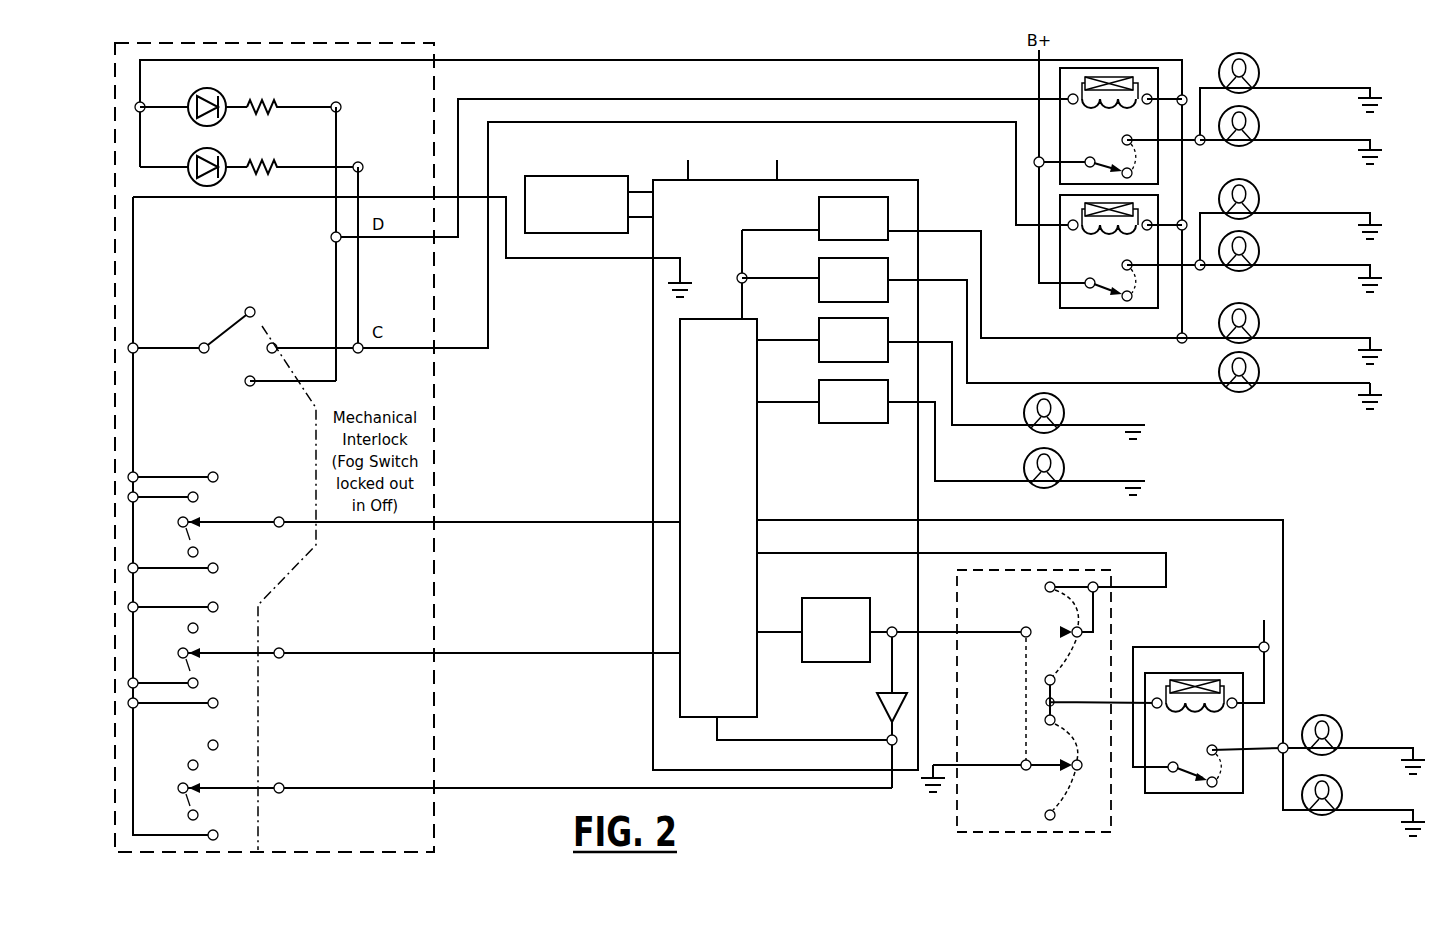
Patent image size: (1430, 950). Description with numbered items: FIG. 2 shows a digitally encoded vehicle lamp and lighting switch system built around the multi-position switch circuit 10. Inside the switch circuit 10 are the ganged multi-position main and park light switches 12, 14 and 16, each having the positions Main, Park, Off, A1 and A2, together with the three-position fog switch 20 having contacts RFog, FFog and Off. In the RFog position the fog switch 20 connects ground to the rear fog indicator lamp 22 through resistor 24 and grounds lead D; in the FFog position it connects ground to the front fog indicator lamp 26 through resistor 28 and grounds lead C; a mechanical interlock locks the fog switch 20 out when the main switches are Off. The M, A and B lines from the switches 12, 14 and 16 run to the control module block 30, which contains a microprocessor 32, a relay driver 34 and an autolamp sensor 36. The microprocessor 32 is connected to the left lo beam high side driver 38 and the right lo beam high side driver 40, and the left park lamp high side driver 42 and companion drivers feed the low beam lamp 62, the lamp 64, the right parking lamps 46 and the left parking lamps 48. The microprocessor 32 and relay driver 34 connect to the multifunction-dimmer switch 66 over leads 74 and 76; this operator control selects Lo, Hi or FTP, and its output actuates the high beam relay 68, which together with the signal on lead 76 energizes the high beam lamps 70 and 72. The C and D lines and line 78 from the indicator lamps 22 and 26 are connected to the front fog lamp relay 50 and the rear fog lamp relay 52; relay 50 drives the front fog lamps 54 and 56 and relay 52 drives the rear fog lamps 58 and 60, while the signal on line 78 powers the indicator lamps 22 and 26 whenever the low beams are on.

The multi-position switch circuit 10 is at (434, 395).
The multi-position main and park light switch 12 is at (168, 763).
The multi-position main and park light switch 14 is at (238, 646).
The multi-position main and park light switch 16 is at (255, 493).
The fog switch 20 is at (220, 321).
The rear fog indicator lamp 22 is at (222, 101).
The resistor 24 is at (267, 103).
The front fog indicator lamp 26 is at (220, 160).
The resistor 28 is at (267, 163).
The control module block 30 is at (847, 180).
The microprocessor 32 is at (762, 458).
The relay driver 34 is at (838, 597).
The autolamp sensor 36 is at (578, 175).
The left lo beam high side driver 38 is at (819, 210).
The right lo beam high side driver 40 is at (819, 272).
The left park lamp high side driver 42 is at (819, 333).
The right parking lamps 46 is at (1024, 410).
The left parking lamps 48 is at (1024, 465).
The front fog lamp relay 50 is at (1113, 68).
The rear fog lamp relay 52 is at (1060, 302).
The front fog lamp 54 is at (1222, 62).
The front fog lamp 56 is at (1258, 118).
The rear fog lamp 58 is at (1240, 182).
The rear fog lamp 60 is at (1255, 245).
The low beam lamp 62 is at (1255, 310).
The high beam lamp 64 is at (1252, 390).
The multifunction-dimmer switch 66 is at (1118, 627).
The high beam relay 68 is at (1190, 672).
The high beam lamp 70 is at (1325, 718).
The high beam lamp 72 is at (1338, 779).
The lead 74 is at (1060, 562).
The lead 76 is at (1153, 520).
The line 78 is at (490, 60).